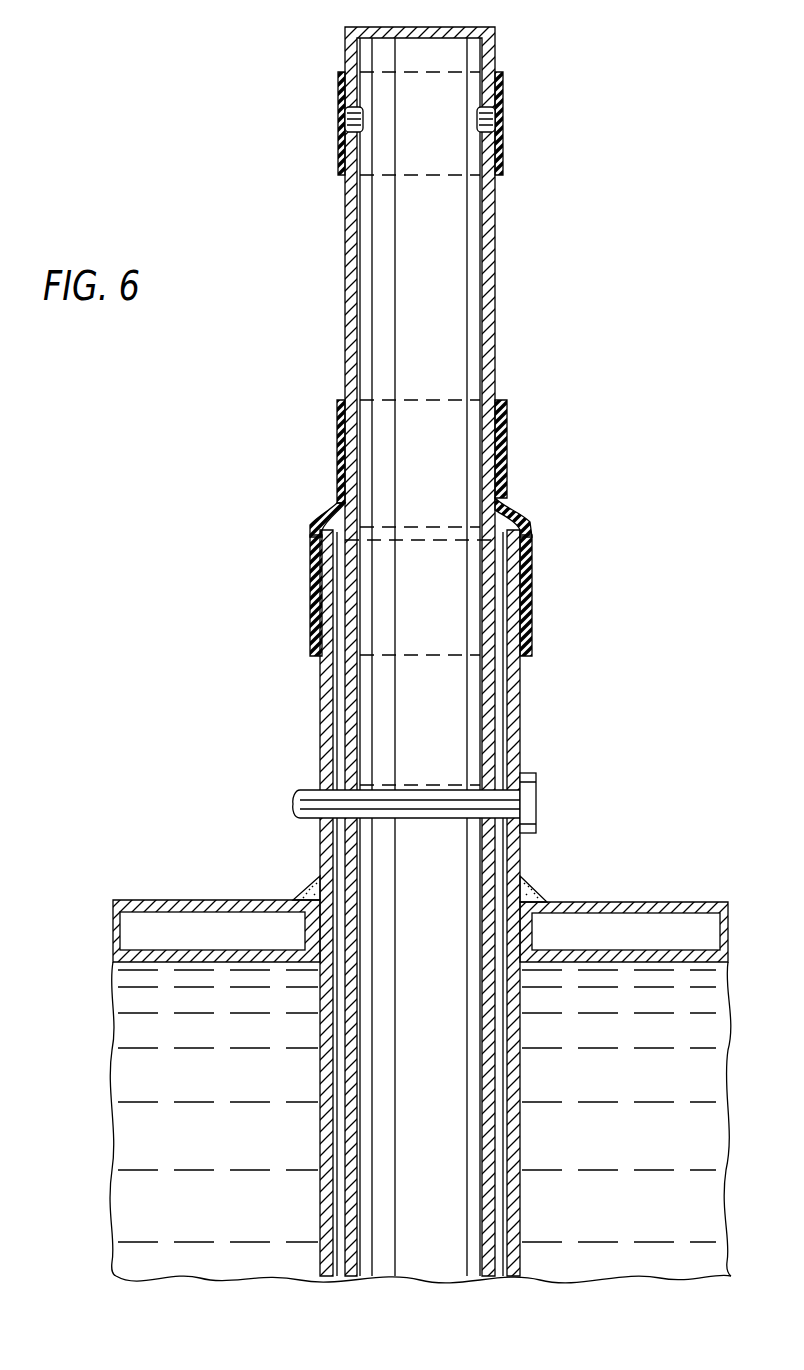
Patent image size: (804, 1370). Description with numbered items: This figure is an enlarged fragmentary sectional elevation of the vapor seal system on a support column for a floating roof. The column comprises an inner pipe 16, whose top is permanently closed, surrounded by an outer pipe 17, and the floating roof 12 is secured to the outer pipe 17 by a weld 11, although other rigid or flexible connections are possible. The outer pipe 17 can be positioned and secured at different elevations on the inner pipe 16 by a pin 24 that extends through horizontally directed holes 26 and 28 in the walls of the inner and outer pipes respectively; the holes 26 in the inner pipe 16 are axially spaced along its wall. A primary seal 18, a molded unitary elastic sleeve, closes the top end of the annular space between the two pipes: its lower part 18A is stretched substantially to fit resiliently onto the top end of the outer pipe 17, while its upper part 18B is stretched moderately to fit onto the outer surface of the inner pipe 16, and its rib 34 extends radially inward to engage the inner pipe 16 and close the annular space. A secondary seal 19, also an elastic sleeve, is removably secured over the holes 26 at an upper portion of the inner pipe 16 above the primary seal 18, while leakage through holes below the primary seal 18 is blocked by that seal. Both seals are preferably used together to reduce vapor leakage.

The weld 11 is at (537, 892).
The floating roof 12 is at (663, 901).
The inner pipe 16 is at (346, 240).
The outer pipe 17 is at (318, 737).
The primary seal 18 is at (240, 548).
The lower part of primary seal 18A is at (308, 604).
The upper part of primary seal 18B is at (338, 436).
The secondary seal 19 is at (342, 132).
The pin 24 is at (540, 797).
The holes 26 is at (348, 124).
The holes 28 is at (343, 864).
The rib 34 is at (455, 523).